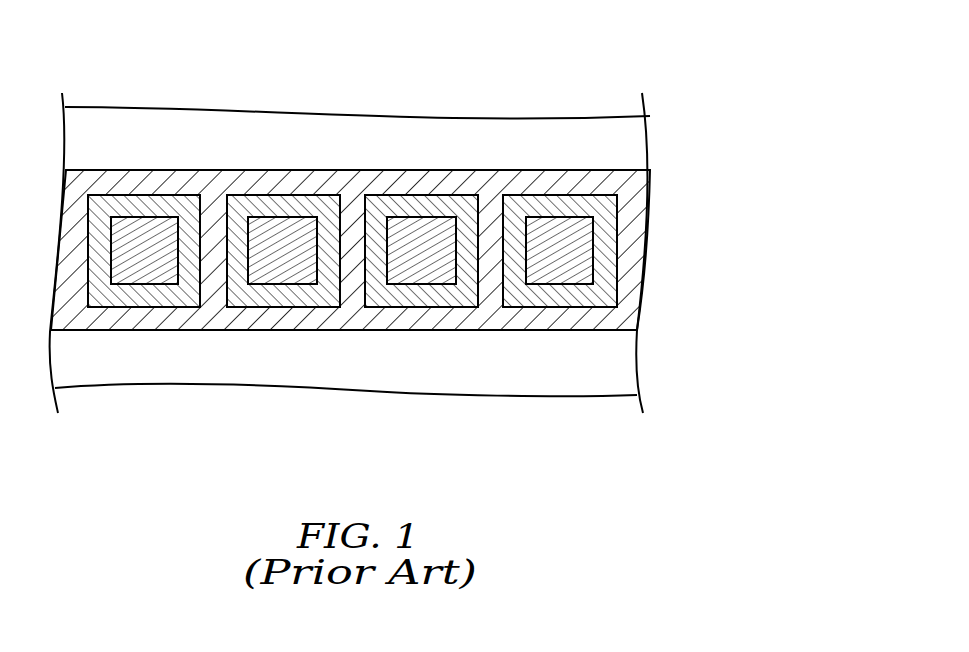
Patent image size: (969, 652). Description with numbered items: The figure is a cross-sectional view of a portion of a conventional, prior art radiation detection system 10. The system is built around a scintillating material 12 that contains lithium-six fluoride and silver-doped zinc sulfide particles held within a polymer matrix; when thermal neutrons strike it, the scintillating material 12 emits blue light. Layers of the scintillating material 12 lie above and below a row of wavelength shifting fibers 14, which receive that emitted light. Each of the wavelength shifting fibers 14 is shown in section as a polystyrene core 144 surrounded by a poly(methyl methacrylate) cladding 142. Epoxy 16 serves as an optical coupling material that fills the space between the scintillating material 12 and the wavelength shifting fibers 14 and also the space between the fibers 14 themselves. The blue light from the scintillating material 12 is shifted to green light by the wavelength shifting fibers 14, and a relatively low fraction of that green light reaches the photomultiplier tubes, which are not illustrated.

The radiation detection system 10 is at (665, 42).
The scintillating material 12 is at (301, 147).
The wavelength shifting fibers 14 is at (205, 190).
The poly(methyl methacrylate) cladding 142 is at (280, 203).
The polystyrene core 144 is at (267, 270).
The epoxy 16 is at (627, 311).